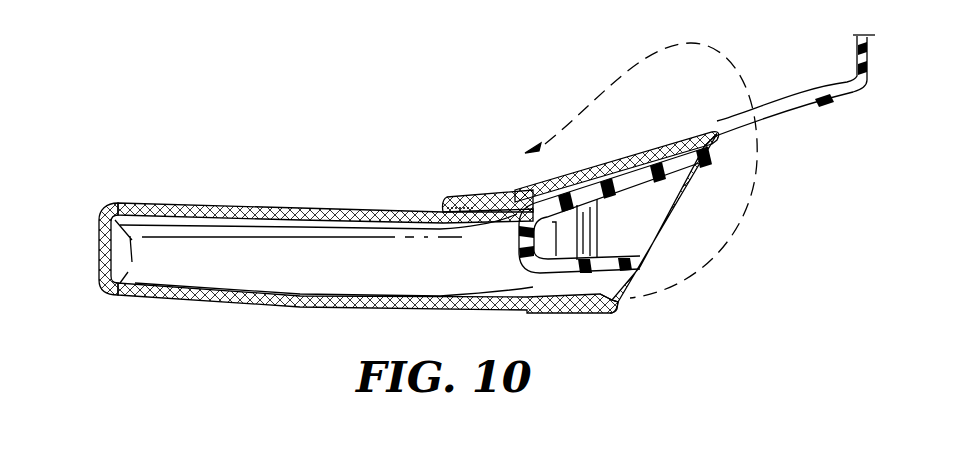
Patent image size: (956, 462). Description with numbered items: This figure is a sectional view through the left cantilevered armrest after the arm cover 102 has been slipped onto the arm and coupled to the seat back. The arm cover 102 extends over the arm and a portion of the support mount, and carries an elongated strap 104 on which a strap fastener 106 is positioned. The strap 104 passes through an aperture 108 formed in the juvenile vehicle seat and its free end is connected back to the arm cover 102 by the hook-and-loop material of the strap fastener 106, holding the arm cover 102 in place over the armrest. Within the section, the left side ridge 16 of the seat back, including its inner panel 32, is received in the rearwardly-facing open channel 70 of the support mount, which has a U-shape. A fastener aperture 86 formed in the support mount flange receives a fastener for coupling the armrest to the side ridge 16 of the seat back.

The arm cover 102 is at (240, 204).
The strap fastener 106 is at (475, 198).
The strap 104 is at (693, 200).
The left side ridge 16 is at (641, 168).
The inner panel 32 is at (641, 186).
The open channel 70 is at (605, 260).
The fastener aperture 86 is at (628, 305).
The aperture 108 is at (732, 124).